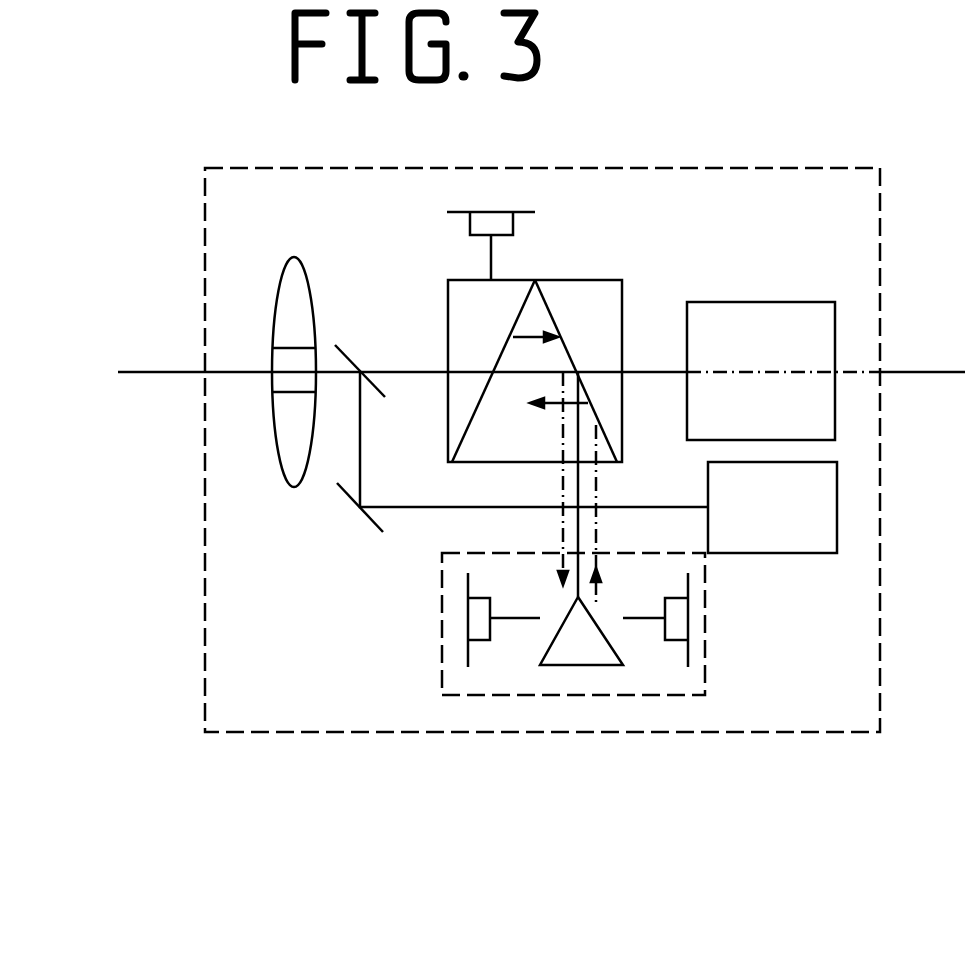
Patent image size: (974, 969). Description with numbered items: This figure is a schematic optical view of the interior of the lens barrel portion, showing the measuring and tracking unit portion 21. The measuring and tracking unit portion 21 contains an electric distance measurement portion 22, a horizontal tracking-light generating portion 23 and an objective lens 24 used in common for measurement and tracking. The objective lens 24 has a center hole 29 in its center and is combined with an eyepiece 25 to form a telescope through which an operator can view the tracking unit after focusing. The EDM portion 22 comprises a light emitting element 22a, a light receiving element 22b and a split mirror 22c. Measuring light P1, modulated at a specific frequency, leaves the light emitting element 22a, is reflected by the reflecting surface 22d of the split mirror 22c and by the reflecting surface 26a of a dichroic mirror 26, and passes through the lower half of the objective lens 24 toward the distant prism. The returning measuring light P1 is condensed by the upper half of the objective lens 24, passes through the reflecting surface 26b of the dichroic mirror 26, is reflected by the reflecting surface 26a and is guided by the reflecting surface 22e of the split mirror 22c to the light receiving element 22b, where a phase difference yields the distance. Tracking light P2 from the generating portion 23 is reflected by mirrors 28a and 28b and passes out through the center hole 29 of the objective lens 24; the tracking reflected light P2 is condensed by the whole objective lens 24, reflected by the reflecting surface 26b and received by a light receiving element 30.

The measuring and tracking unit portion 21 is at (882, 573).
The electric distance measurement (EDM) portion 22 is at (533, 698).
The light emitting element 22a is at (690, 632).
The light receiving element 22b is at (483, 640).
The split mirror 22c is at (583, 660).
The reflecting surface 22d is at (620, 640).
The reflecting surface 22e is at (552, 637).
The horizontal tracking-light generating portion 23 is at (761, 553).
The objective lens 24 is at (290, 448).
The eyepiece 25 is at (788, 320).
The dichroic mirror 26 is at (582, 296).
The reflecting surface 26a is at (570, 350).
The reflecting surface 26b is at (465, 427).
The mirror 28a is at (358, 512).
The mirror 28b is at (335, 347).
The center hole 29 is at (282, 378).
The light receiving element 30 is at (505, 213).
The measuring light P1 is at (596, 591).
The tracking light P2 is at (668, 506).